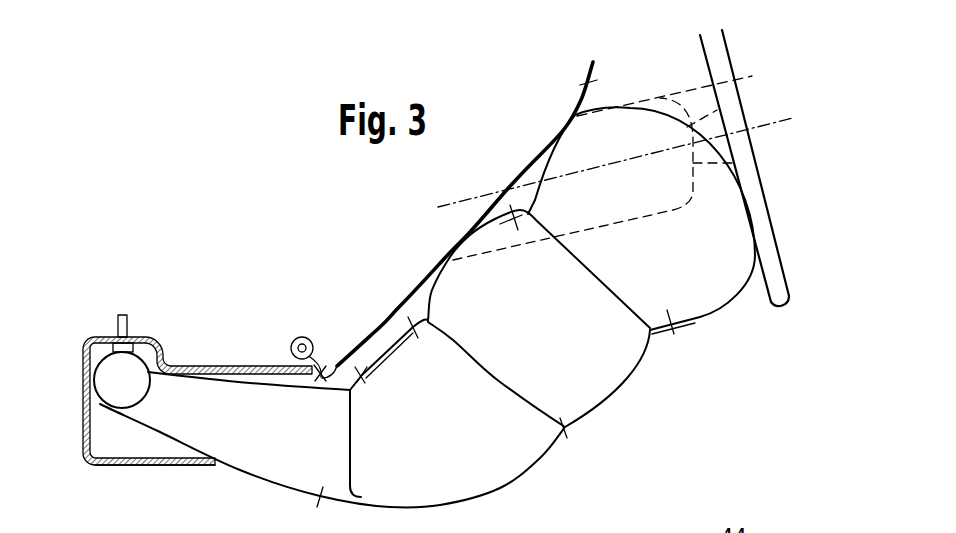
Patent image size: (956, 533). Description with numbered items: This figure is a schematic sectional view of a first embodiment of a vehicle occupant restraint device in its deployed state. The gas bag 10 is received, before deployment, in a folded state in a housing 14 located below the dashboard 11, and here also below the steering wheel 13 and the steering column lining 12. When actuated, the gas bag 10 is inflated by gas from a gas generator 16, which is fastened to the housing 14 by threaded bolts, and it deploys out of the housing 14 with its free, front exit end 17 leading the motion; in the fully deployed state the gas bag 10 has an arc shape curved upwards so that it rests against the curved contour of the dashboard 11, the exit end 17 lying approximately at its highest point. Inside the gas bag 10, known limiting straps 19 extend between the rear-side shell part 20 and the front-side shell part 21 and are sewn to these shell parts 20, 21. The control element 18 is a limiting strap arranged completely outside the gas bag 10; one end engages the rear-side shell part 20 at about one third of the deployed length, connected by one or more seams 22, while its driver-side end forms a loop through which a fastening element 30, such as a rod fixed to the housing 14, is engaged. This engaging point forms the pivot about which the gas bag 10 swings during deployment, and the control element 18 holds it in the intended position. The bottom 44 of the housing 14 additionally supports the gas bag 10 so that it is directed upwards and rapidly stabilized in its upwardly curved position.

The gas bag 10 is at (703, 297).
The dashboard 11 is at (595, 78).
The steering column lining 12 is at (732, 80).
The steering wheel 13 is at (767, 220).
The housing 14 is at (162, 357).
The gas generator 16 is at (115, 380).
The free, front exit end 17 is at (735, 163).
The control element 18 is at (337, 365).
The limiting straps 19 is at (355, 453).
The rear-side shell part 20 is at (433, 288).
The front-side shell part 21 is at (630, 387).
The seam 22 is at (372, 383).
The fastening element 30 is at (295, 339).
The bottom 44 is at (160, 470).